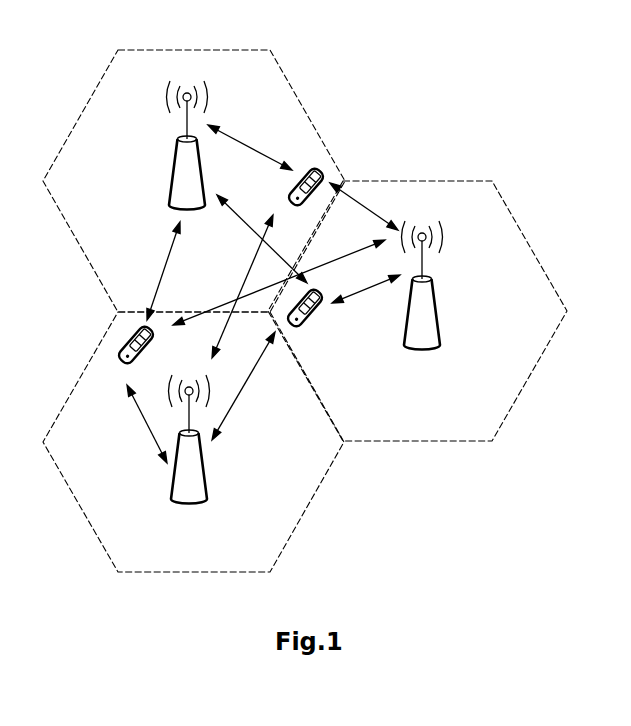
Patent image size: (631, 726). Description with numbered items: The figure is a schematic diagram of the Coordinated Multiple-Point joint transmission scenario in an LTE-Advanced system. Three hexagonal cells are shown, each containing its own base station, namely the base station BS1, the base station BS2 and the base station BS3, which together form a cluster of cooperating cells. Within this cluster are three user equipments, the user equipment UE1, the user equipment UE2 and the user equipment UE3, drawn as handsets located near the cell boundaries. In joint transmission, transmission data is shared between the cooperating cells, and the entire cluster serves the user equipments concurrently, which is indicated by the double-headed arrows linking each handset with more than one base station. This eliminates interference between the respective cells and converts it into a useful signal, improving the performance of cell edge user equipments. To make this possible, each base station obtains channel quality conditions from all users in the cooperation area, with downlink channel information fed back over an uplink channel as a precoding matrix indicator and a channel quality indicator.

The base station BS1 is at (441, 285).
The base station BS2 is at (172, 145).
The base station BS3 is at (207, 439).
The user equipment UE1 is at (314, 315).
The user equipment UE2 is at (286, 187).
The user equipment UE3 is at (122, 354).